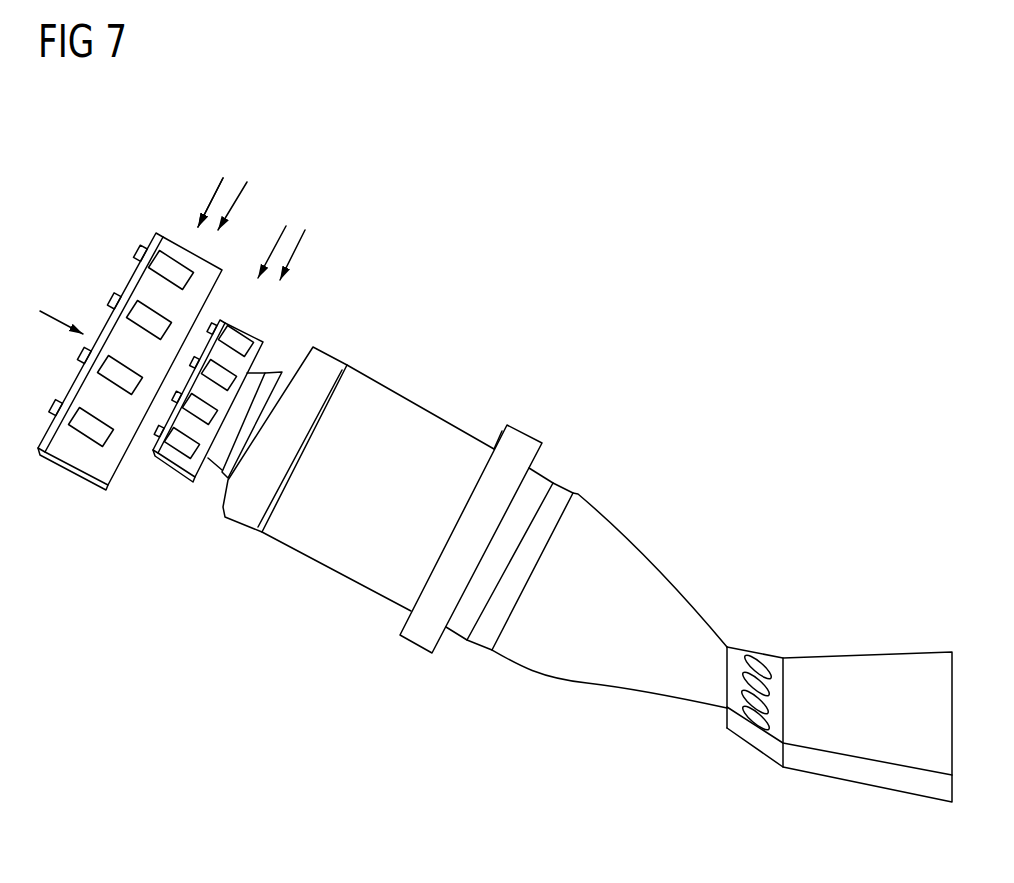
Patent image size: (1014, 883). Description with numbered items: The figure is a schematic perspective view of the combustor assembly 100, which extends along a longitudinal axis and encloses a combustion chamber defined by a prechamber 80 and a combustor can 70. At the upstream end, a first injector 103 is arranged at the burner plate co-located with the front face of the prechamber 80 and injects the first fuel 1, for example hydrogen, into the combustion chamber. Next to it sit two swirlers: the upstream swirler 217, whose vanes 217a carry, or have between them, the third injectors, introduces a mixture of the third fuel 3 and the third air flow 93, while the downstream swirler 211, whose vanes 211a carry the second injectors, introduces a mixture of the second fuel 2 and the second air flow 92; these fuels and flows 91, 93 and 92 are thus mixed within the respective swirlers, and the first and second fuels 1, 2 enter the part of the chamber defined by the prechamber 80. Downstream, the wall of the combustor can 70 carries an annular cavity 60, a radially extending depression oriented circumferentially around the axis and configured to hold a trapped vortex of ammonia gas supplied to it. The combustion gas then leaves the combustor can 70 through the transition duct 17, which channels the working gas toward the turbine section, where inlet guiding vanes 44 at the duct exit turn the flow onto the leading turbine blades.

The combustor assembly 100 is at (681, 261).
The first injector 103 is at (110, 327).
The upstream swirler 217 is at (170, 218).
The vanes of the upstream swirler 217a is at (162, 272).
The downstream swirler 211 is at (280, 344).
The vanes of the downstream swirler 211a is at (236, 347).
The prechamber 80 is at (215, 477).
The combustor can 70 is at (353, 565).
The annular cavity 60 is at (418, 637).
The transition duct 17 is at (615, 673).
The inlet guiding vanes 44 is at (758, 735).
The first fuel 1 is at (43, 314).
The second fuel 2 is at (284, 232).
The third fuel 3 is at (247, 182).
The flow 91 is at (223, 178).
The third air flow 93 is at (210, 202).
The second air flow 92 is at (302, 249).